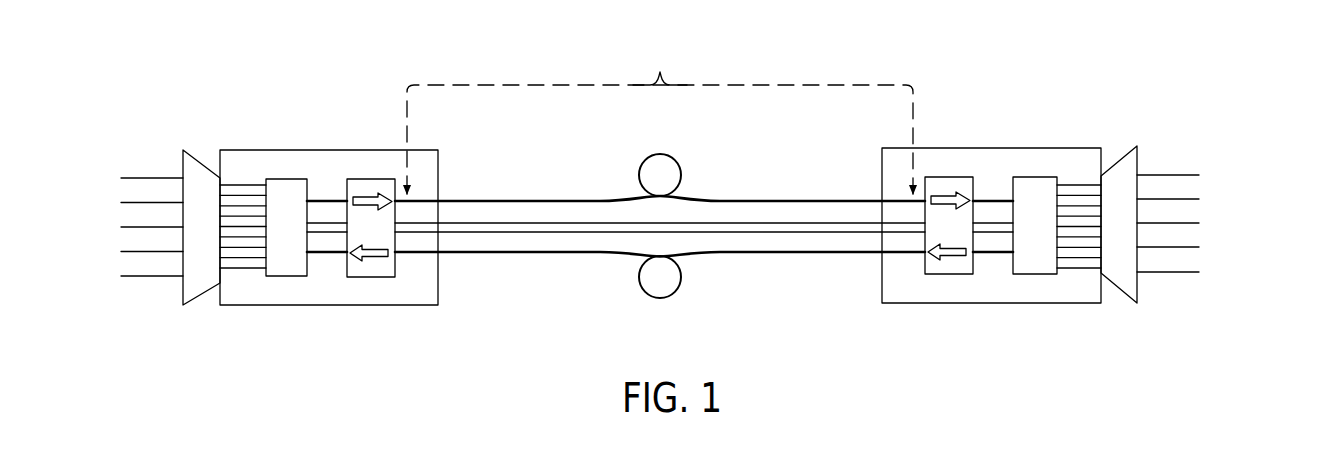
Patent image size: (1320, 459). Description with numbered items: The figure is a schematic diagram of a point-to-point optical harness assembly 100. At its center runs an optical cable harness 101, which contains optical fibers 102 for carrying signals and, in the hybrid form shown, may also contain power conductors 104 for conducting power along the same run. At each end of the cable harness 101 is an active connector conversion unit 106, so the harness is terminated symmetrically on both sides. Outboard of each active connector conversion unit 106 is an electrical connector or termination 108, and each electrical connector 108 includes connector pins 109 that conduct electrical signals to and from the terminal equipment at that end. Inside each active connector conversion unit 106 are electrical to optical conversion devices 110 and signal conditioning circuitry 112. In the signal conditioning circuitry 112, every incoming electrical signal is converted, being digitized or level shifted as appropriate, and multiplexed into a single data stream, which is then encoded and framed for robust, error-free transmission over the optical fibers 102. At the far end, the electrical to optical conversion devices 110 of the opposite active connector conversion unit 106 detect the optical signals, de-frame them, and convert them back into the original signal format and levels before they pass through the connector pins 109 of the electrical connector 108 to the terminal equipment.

The optical harness assembly 100 is at (834, 58).
The optical cable harness 101 is at (660, 116).
The optical fibers 102 is at (771, 197).
The power conductors 104 is at (532, 219).
The active connector conversion unit 106 is at (293, 150).
The electrical connector 108 is at (118, 134).
The connector pins 109 is at (130, 227).
The electrical to optical conversion device 110 is at (369, 279).
The signal conditioning circuitry 112 is at (283, 276).